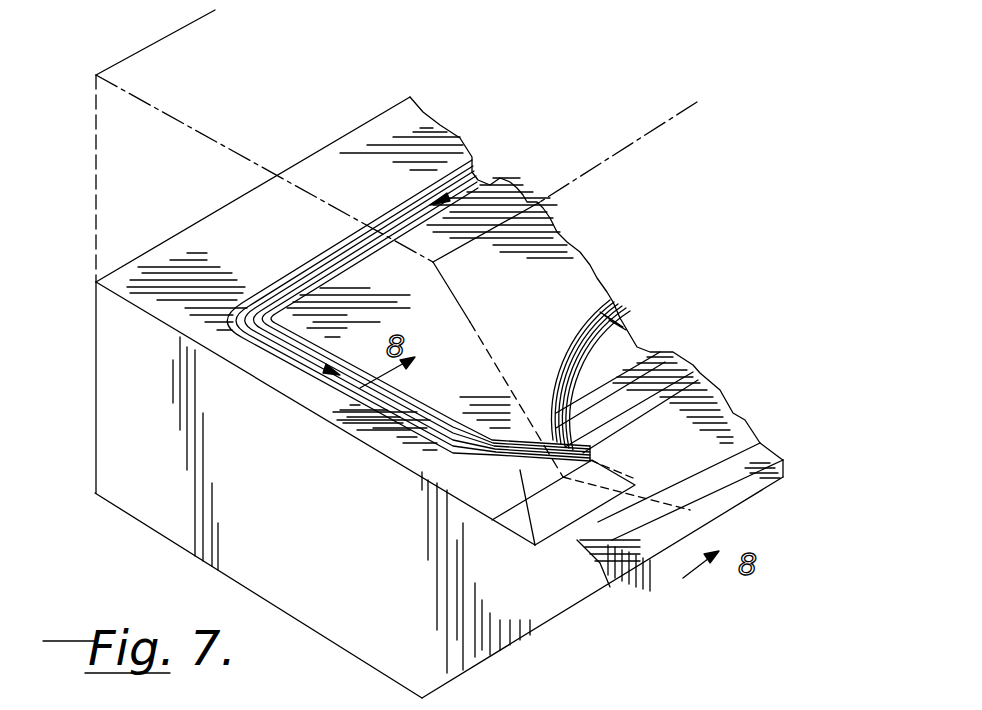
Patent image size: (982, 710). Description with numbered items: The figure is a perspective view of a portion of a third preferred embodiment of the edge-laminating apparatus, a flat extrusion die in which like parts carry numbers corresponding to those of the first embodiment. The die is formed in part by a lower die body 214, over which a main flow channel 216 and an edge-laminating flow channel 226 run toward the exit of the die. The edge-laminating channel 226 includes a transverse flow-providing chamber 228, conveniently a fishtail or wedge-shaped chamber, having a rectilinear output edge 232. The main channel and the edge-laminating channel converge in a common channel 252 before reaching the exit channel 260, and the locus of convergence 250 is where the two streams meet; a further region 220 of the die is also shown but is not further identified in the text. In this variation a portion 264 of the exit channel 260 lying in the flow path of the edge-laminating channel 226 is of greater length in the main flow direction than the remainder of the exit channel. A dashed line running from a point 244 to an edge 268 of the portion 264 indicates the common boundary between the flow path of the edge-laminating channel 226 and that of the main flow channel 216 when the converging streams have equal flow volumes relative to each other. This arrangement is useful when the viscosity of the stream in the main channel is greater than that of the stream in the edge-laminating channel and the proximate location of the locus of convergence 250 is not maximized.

The lower die body 214 is at (553, 622).
The main flow channel 216 is at (597, 367).
The plateau surface 220 is at (673, 363).
The edge-laminating flow channel 226 is at (322, 268).
The transverse flow-providing chamber 228 is at (490, 474).
The output edge 232 is at (487, 480).
The point 244 is at (595, 452).
The locus of convergence 250 is at (553, 457).
The common channel 252 is at (520, 518).
The exit channel 260 is at (762, 462).
The portion of exit channel 264 is at (577, 540).
The edge of portion 268 is at (665, 493).